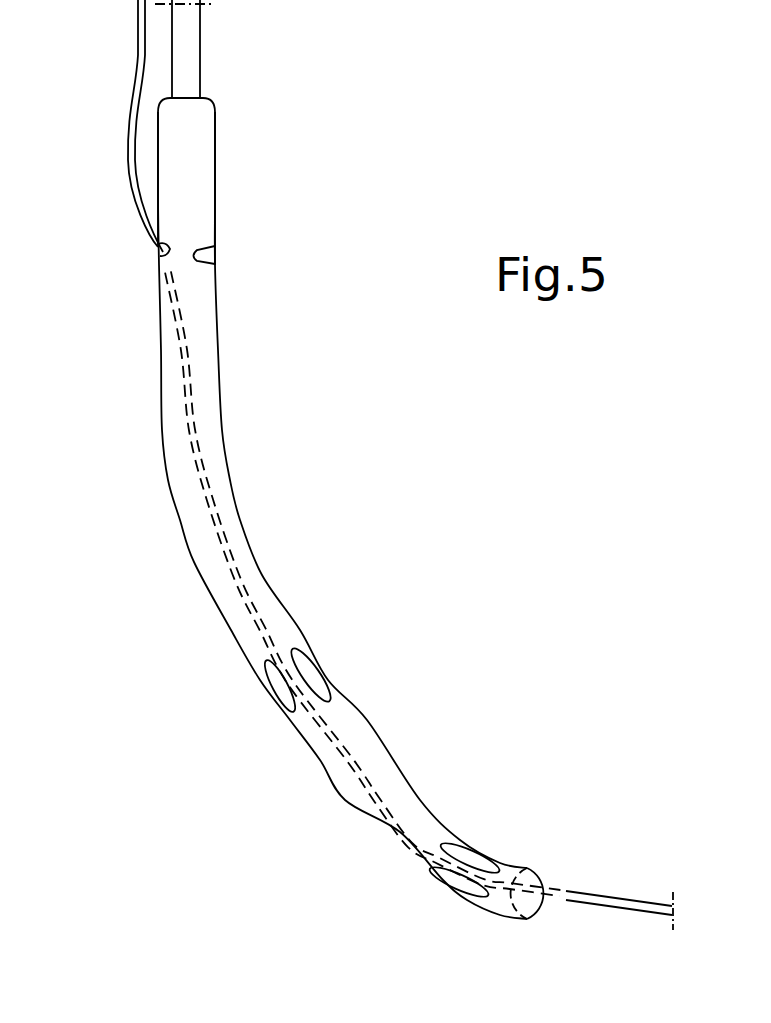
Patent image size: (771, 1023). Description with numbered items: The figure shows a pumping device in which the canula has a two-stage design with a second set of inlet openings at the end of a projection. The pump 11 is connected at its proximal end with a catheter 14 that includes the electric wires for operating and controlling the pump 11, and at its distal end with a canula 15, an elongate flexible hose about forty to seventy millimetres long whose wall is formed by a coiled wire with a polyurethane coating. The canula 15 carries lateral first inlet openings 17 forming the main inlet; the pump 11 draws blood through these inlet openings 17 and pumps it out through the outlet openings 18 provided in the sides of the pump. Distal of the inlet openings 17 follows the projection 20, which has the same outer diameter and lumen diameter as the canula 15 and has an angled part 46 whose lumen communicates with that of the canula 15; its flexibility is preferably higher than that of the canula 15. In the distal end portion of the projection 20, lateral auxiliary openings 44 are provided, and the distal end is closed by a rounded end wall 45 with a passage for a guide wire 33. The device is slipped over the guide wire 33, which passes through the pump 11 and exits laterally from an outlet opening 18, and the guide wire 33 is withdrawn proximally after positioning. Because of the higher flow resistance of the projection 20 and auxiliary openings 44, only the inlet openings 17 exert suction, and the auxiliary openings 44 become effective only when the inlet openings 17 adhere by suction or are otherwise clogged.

The pump 11 is at (202, 145).
The catheter 14 is at (192, 60).
The canula 15 is at (238, 550).
The inlet openings 17 is at (300, 688).
The outlet openings 18 is at (180, 240).
The projection 20 is at (395, 764).
The guide wire 33 is at (141, 55).
The auxiliary openings 44 is at (477, 867).
The rounded end wall 45 is at (540, 910).
The angled part 46 is at (460, 838).